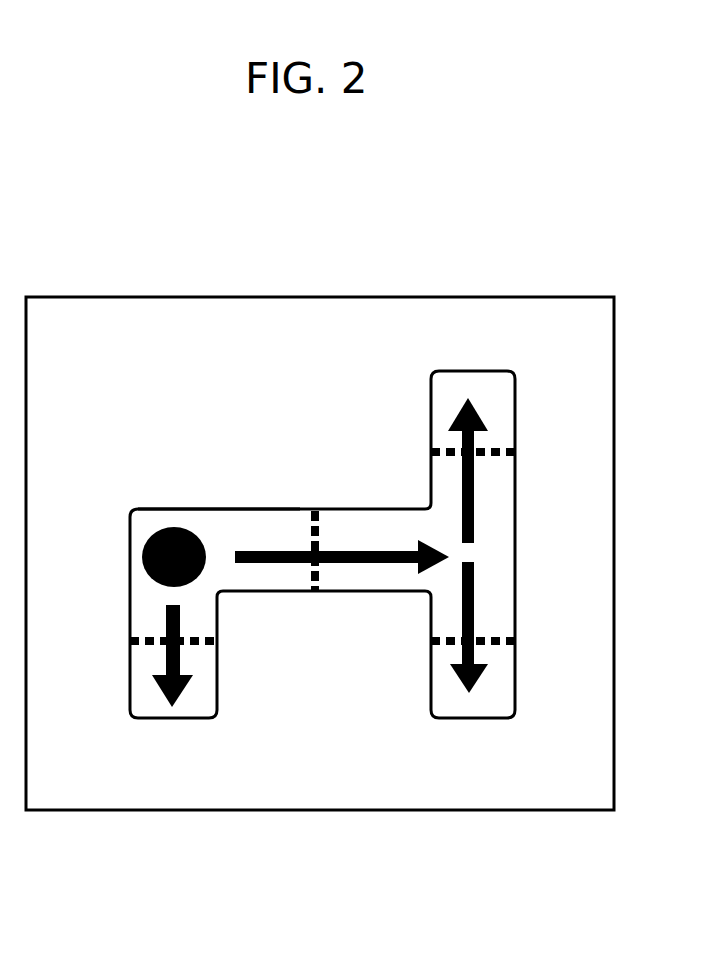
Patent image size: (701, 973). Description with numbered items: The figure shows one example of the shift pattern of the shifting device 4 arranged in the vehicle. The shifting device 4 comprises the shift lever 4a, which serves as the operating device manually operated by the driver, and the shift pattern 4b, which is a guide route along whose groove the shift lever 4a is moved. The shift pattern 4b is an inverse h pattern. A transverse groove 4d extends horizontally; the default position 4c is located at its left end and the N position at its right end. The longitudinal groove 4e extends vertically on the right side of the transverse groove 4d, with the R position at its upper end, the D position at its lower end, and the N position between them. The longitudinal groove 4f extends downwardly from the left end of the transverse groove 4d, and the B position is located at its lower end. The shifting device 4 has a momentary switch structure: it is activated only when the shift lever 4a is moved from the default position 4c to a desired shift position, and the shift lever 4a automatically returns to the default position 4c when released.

The shifting device 4 is at (505, 280).
The shift lever 4a is at (142, 557).
The shift pattern 4b is at (340, 481).
The default position 4c is at (170, 516).
The transverse groove 4d is at (290, 583).
The longitudinal groove 4e is at (503, 497).
The longitudinal groove 4f is at (207, 675).